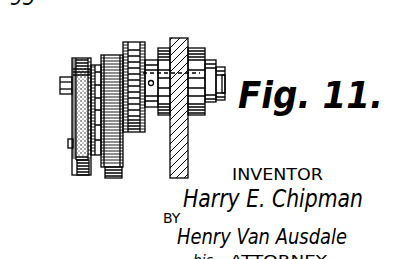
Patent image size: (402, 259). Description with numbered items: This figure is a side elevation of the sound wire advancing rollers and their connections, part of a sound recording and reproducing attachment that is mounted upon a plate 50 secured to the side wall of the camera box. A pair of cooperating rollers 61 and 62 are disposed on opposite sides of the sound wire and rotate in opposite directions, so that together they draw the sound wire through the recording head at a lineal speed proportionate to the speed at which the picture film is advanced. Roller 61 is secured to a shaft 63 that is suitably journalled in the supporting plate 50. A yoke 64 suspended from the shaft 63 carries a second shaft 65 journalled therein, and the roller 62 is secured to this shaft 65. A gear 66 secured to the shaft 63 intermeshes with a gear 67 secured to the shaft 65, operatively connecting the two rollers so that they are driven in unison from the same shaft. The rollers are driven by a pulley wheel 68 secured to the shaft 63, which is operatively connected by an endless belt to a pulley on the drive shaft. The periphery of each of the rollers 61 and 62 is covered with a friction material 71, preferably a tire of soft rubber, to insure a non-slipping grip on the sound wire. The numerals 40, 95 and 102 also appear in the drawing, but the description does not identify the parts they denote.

The shaft 40 is at (72, 116).
The plate 50 is at (186, 43).
The roller 61 is at (74, 59).
The roller 62 is at (76, 165).
The shaft 63 is at (67, 84).
The yoke 64 is at (99, 64).
The shaft 65 is at (68, 145).
The gear 66 is at (122, 54).
The gear 67 is at (118, 172).
The pulley wheel 68 is at (150, 44).
The friction material 71 is at (84, 58).
The lever 95 is at (22, 5).
The collar 102 is at (217, 58).